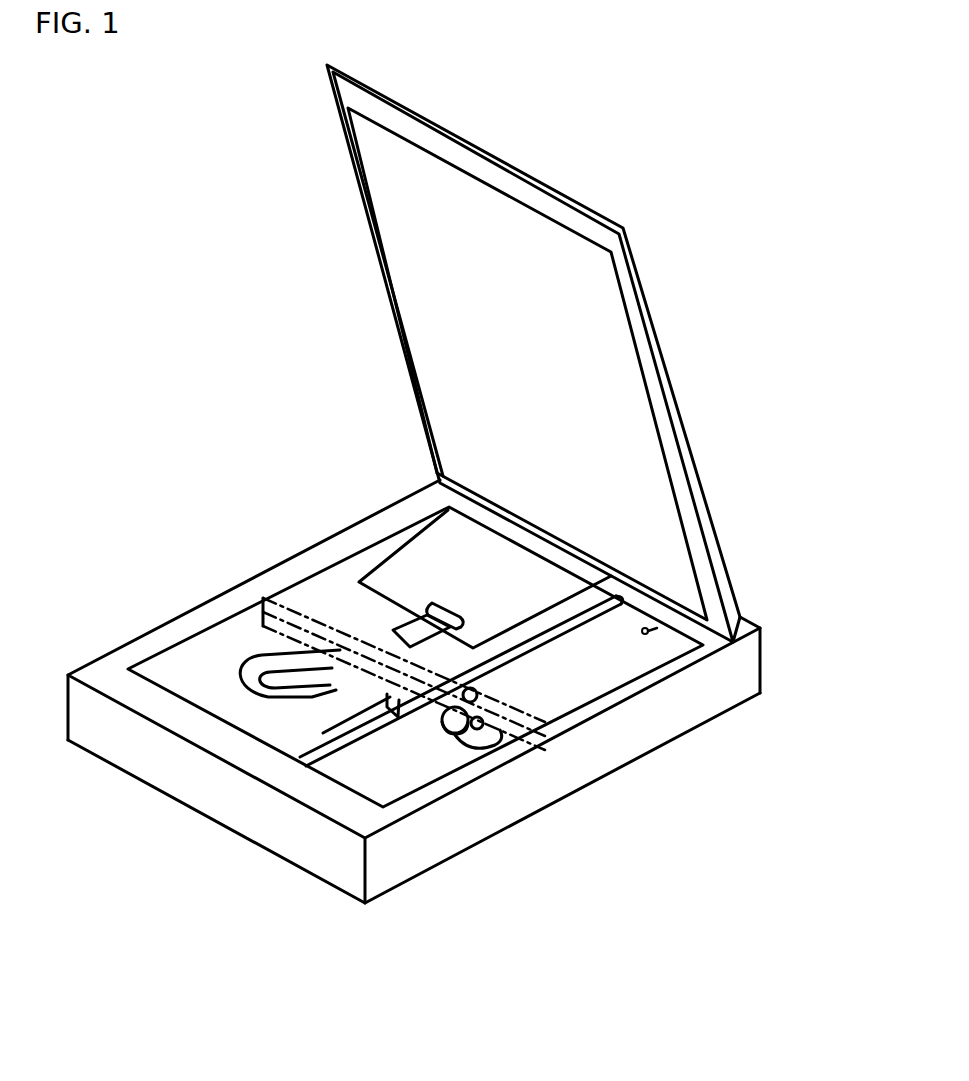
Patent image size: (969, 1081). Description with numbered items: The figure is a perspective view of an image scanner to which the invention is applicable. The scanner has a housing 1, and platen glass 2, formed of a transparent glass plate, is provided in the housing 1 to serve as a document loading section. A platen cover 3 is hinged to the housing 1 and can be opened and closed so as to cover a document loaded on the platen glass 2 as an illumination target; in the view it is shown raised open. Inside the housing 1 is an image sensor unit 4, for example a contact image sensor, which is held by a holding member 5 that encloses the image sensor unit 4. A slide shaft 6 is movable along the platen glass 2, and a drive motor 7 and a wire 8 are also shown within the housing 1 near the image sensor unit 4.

The housing 1 is at (622, 745).
The platen glass 2 is at (165, 660).
The platen cover 3 is at (652, 344).
The image sensor unit 4 is at (288, 607).
The holding member 5 is at (266, 616).
The slide shaft 6 is at (330, 733).
The wire 8 is at (380, 718).
The drive motor 7 is at (470, 735).